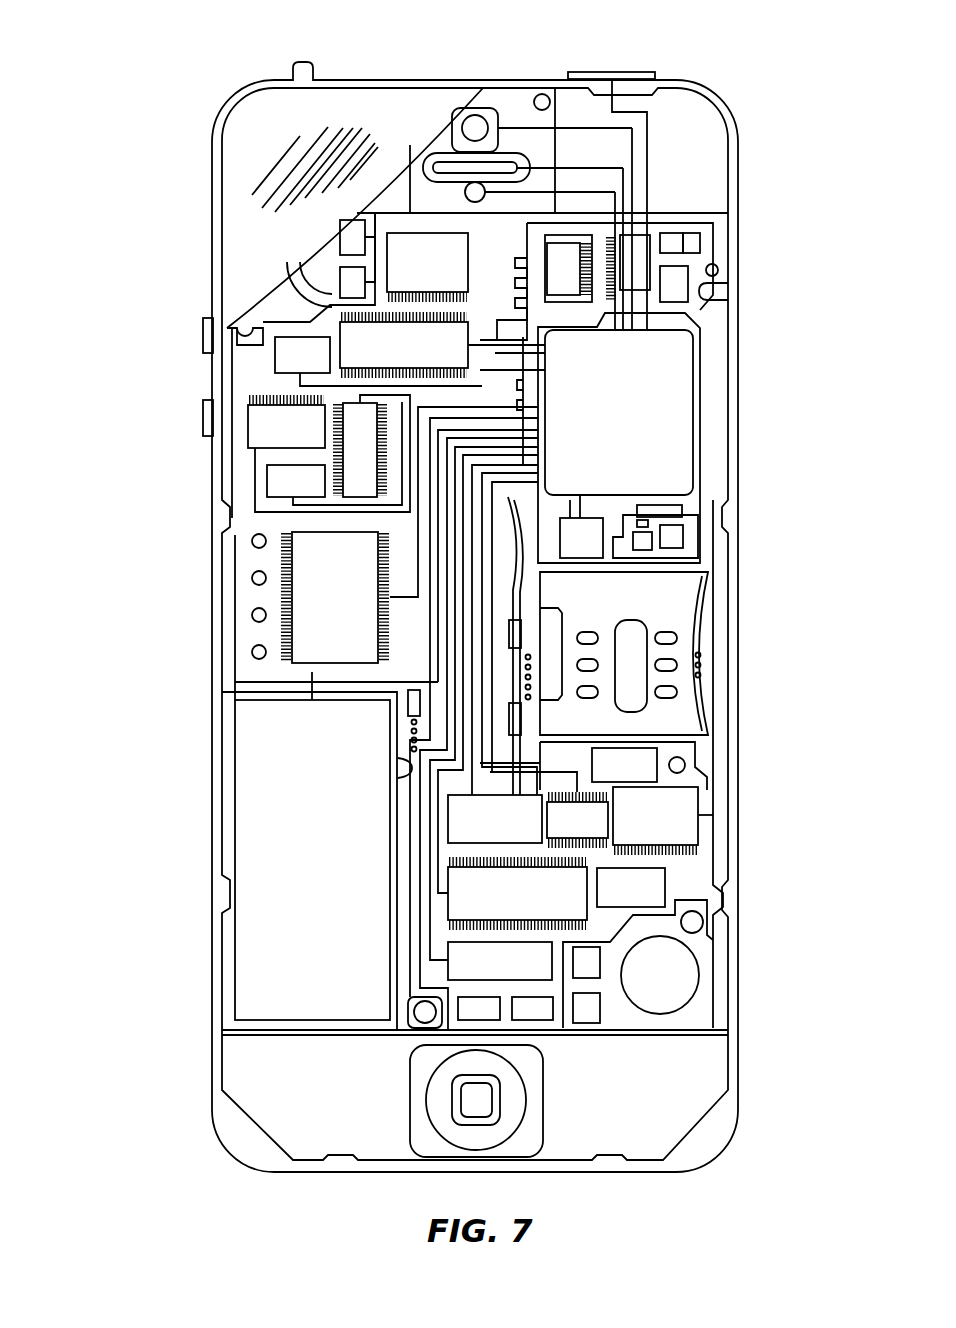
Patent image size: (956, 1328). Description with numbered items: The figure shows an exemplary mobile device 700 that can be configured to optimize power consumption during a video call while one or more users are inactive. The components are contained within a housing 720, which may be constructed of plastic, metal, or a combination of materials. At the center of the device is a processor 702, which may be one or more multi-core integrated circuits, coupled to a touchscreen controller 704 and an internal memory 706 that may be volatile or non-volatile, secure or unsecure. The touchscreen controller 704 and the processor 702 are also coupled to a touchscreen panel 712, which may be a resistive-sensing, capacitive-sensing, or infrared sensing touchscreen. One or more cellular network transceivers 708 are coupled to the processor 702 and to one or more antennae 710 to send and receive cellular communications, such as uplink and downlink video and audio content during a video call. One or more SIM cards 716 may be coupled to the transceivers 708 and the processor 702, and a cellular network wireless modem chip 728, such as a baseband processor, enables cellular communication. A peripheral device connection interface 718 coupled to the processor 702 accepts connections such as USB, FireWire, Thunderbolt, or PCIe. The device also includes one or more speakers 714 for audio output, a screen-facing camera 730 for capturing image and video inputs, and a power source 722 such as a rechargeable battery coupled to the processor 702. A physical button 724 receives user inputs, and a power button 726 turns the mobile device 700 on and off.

The mobile device 700 is at (136, 70).
The processor 702 is at (619, 438).
The touchscreen controller 704 is at (427, 265).
The internal memory 706 is at (335, 597).
The cellular network transceiver 708 is at (650, 245).
The antenna 710 is at (690, 286).
The touchscreen panel 712 is at (240, 178).
The speaker 714 is at (438, 153).
The subscriber identity module (SIM) card 716 is at (631, 887).
The peripheral device connection interface 718 is at (500, 961).
The housing 720 is at (738, 1060).
The power source 722 is at (312, 860).
The physical button 724 is at (472, 1098).
The power button 726 is at (608, 72).
The cellular network wireless modem chip 728 is at (517, 893).
The screen-facing camera 730 is at (462, 118).